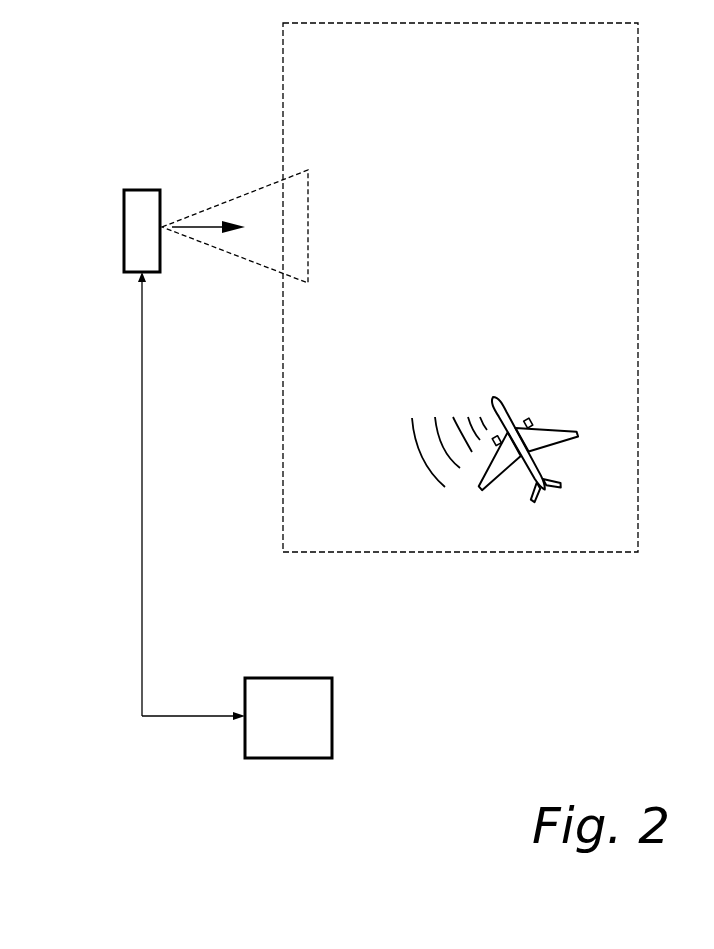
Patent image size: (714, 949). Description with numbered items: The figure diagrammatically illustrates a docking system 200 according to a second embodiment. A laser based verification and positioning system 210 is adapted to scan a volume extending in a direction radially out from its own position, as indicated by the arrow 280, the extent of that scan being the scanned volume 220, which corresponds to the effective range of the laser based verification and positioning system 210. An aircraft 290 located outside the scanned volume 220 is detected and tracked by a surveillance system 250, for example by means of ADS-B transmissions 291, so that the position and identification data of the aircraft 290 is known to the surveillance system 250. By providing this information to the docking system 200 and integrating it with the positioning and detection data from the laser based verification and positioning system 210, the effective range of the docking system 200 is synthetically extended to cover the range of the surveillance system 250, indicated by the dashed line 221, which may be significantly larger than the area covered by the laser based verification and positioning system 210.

The docking system 200 is at (96, 257).
The laser based verification and positioning system 210 is at (142, 208).
The scanned volume 220 is at (263, 208).
The dashed line 221 is at (482, 23).
The surveillance system 250 is at (288, 718).
The arrow 280 is at (212, 223).
The aircraft 290 is at (505, 417).
The ADS-B transmissions 291 is at (453, 387).